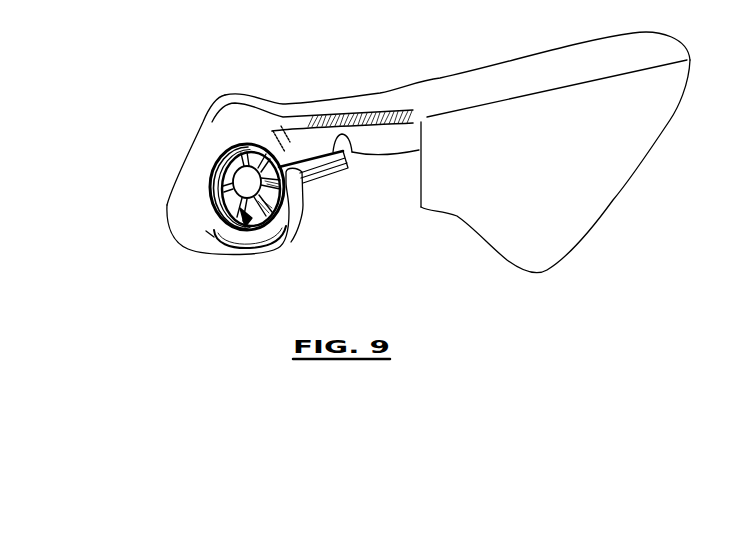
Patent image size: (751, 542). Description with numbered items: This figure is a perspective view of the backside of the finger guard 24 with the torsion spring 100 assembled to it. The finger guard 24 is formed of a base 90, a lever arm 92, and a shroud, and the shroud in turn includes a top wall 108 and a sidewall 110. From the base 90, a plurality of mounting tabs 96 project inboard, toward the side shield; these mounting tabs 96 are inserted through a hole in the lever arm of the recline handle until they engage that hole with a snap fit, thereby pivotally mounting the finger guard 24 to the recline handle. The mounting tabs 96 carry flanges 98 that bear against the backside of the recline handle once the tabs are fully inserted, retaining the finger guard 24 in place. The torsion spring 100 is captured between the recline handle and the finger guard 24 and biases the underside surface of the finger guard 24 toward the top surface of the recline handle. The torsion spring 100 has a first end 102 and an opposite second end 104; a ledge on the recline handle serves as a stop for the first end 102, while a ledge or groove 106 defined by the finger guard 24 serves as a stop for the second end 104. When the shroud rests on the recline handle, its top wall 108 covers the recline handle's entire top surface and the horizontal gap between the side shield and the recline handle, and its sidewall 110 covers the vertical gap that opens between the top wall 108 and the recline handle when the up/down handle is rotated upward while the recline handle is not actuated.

The finger guard 24 is at (184, 41).
The base 90 is at (228, 100).
The lever arm 92 is at (378, 103).
The mounting tabs 96 is at (284, 252).
The flanges 98 is at (212, 200).
The torsion spring 100 is at (212, 151).
The first end 102 is at (214, 242).
The second end 104 is at (343, 137).
The ledge or groove 106 is at (318, 153).
The top wall 108 is at (527, 70).
The sidewall 110 is at (593, 175).